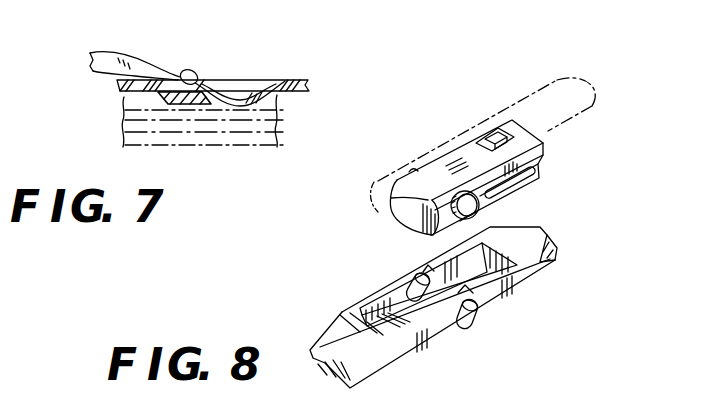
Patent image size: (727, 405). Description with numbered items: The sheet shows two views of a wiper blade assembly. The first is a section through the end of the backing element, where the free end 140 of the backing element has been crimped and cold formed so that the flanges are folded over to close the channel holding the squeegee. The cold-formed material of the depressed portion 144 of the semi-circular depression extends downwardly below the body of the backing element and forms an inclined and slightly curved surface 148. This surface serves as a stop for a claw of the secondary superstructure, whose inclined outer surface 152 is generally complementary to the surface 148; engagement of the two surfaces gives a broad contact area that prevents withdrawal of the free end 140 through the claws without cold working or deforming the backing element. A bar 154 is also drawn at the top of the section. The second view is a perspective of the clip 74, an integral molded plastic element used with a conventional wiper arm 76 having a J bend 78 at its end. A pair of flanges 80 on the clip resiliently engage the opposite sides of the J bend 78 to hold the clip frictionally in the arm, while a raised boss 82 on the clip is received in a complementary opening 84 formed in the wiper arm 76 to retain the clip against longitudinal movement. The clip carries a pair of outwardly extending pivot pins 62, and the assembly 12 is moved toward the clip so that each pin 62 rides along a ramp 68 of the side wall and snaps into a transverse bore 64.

In FIG. 7, the free end of backing element 140 is at (299, 79).
In FIG. 7, the depressed portion 144 is at (255, 103).
In FIG. 7, the inclined curved surface 148 is at (217, 100).
In FIG. 7, the inclined outer surface of claw 152 is at (209, 105).
In FIG. 7, the cross bar 154 is at (190, 72).
In FIG. 8, the assembly 12 is at (533, 277).
In FIG. 8, the pivot pin 62 is at (468, 205).
In FIG. 8, the transverse bore 64 is at (410, 278).
In FIG. 8, the ramp section 68 is at (430, 268).
In FIG. 8, the clip 74 is at (404, 195).
In FIG. 8, the wiper arm 76 is at (560, 92).
In FIG. 8, the J bend 78 is at (498, 203).
In FIG. 8, the flange 80 is at (540, 168).
In FIG. 8, the raised boss 82 is at (513, 130).
In FIG. 8, the opening in wiper arm 84 is at (487, 137).